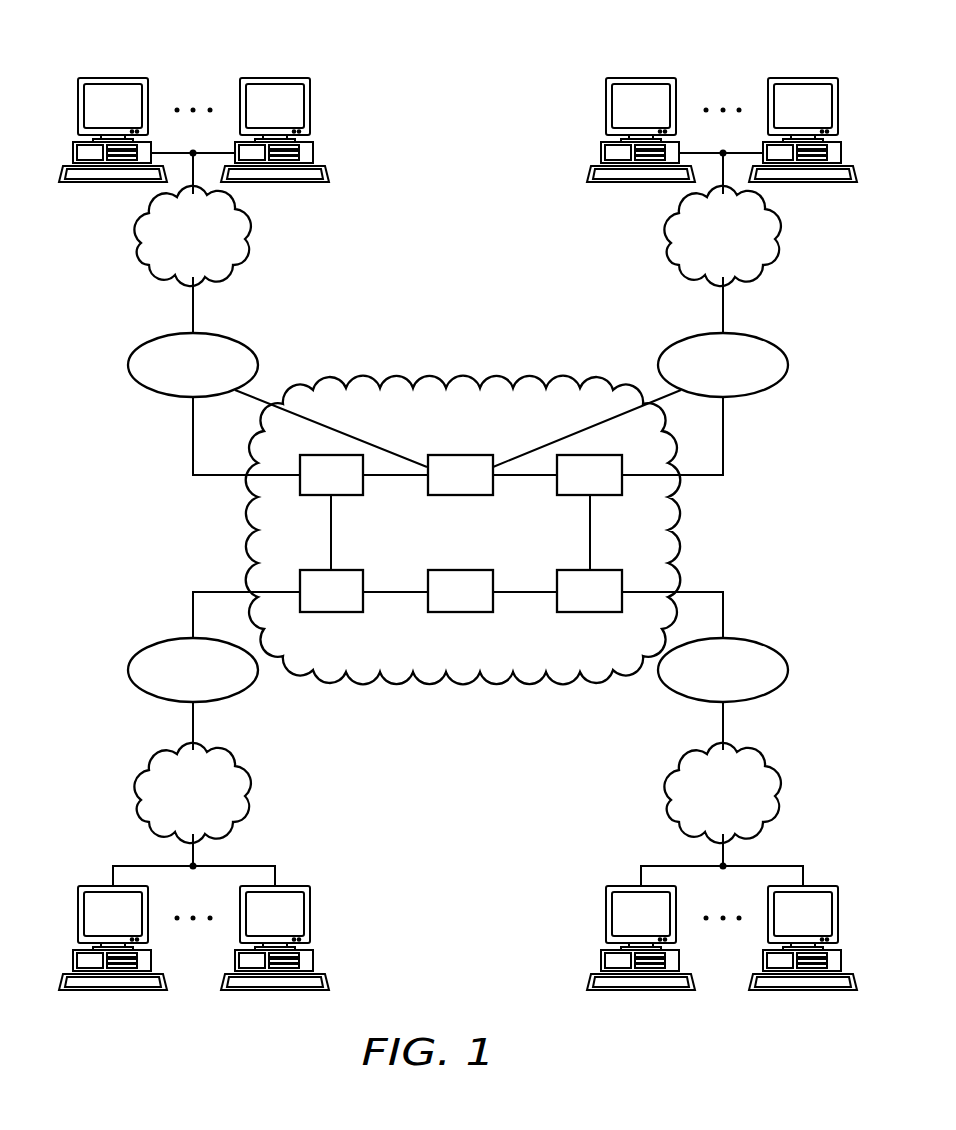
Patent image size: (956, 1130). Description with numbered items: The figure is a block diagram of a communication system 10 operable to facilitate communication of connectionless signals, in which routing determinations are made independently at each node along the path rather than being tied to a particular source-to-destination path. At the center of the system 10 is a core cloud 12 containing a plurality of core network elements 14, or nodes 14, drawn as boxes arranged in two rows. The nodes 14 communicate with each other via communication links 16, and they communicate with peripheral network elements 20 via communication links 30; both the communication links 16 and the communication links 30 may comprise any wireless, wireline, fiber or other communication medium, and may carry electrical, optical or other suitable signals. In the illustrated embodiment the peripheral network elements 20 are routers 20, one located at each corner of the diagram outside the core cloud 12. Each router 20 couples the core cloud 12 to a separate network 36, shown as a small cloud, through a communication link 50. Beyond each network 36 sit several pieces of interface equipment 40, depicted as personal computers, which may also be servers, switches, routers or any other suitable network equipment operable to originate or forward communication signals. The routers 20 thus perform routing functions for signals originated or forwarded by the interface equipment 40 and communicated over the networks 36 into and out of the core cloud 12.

The communication system 10 is at (344, 65).
The core cloud 12 is at (430, 378).
The core network element 14 is at (603, 603).
The communication link 16 is at (331, 528).
The peripheral network element 20 is at (128, 365).
The communication link 30 is at (193, 433).
The network 36 is at (736, 804).
The interface equipment 40 is at (816, 928).
The communication link 50 is at (193, 310).